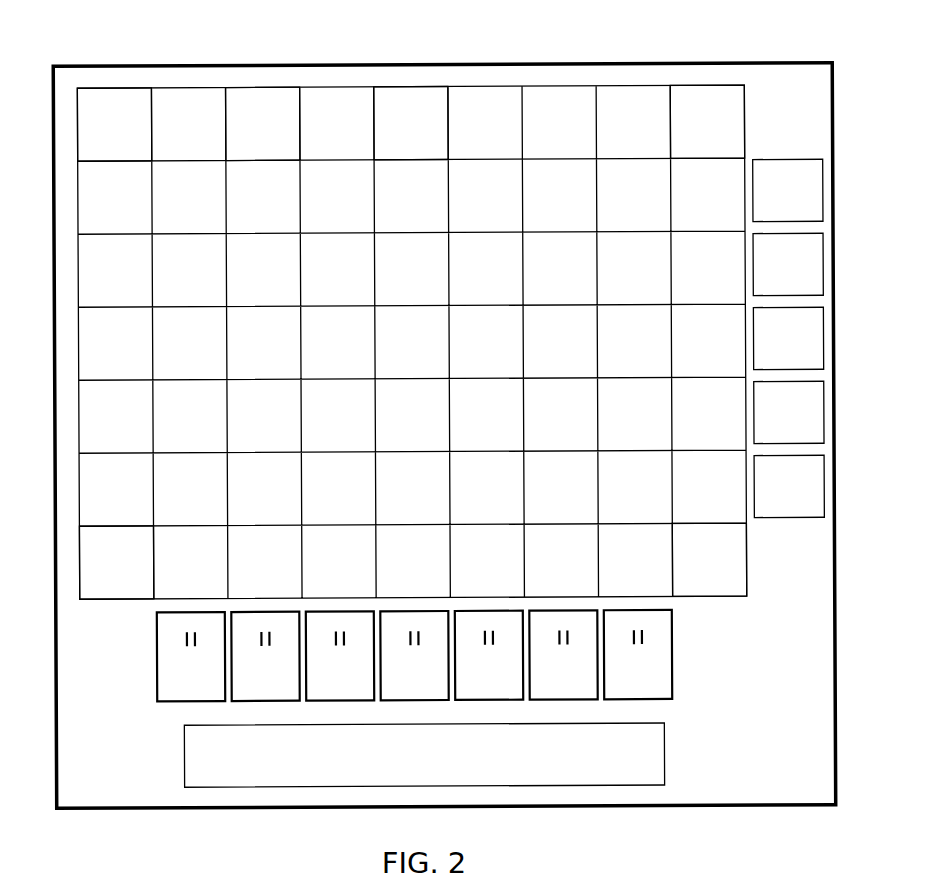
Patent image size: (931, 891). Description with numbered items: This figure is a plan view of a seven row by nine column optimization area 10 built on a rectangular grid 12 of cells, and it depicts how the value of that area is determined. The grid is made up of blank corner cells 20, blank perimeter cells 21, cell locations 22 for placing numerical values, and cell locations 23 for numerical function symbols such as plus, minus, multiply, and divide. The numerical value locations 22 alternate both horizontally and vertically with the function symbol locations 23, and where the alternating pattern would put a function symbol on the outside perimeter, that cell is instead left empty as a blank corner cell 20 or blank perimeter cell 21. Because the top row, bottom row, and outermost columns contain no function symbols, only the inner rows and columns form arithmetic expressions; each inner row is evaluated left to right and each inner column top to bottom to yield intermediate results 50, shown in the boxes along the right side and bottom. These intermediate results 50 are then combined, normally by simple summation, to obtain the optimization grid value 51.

The optimization area 10 is at (52, 775).
The rectangular grid 12 is at (74, 283).
The blank corner cells 20 is at (93, 110).
The blank perimeter cells 21 is at (287, 102).
The cell locations for numerical values 22 is at (310, 137).
The cell locations for numerical function symbols 23 is at (613, 173).
The intermediate results 50 is at (790, 160).
The optimization grid value 51 is at (192, 757).